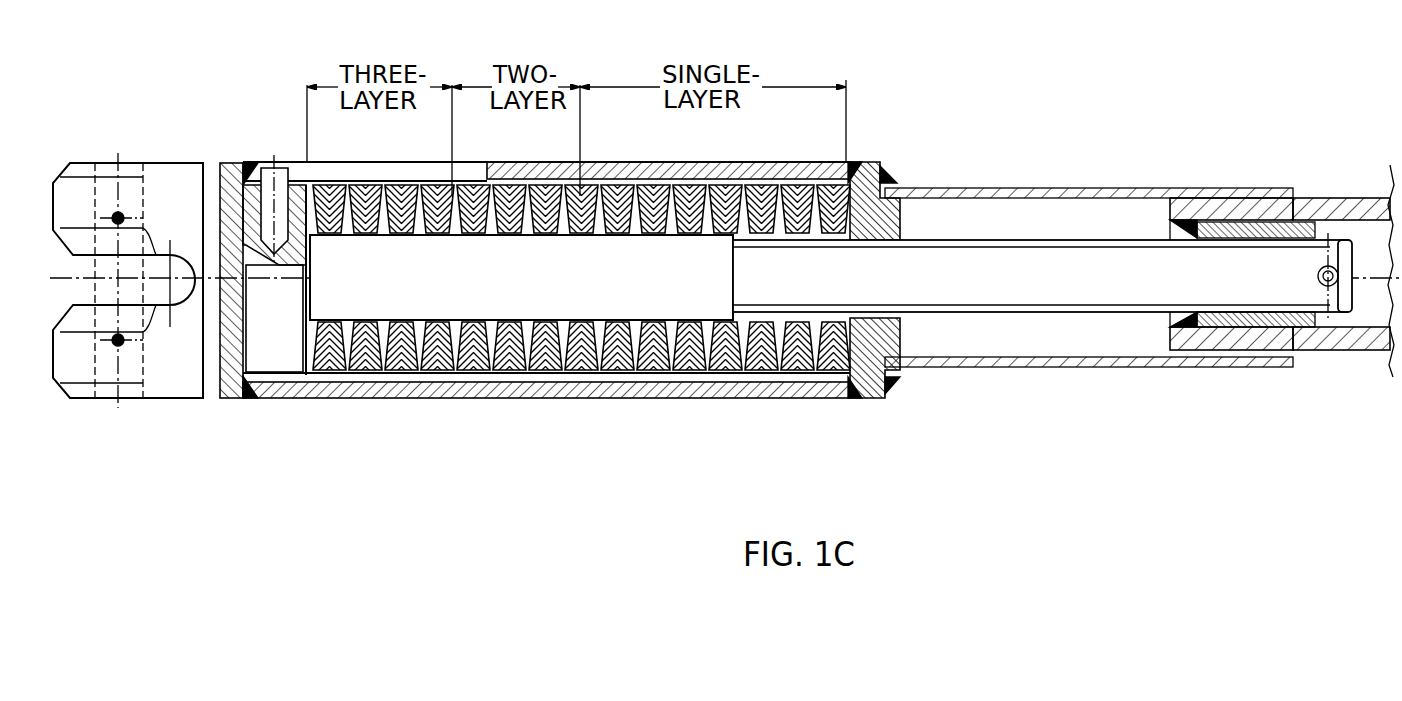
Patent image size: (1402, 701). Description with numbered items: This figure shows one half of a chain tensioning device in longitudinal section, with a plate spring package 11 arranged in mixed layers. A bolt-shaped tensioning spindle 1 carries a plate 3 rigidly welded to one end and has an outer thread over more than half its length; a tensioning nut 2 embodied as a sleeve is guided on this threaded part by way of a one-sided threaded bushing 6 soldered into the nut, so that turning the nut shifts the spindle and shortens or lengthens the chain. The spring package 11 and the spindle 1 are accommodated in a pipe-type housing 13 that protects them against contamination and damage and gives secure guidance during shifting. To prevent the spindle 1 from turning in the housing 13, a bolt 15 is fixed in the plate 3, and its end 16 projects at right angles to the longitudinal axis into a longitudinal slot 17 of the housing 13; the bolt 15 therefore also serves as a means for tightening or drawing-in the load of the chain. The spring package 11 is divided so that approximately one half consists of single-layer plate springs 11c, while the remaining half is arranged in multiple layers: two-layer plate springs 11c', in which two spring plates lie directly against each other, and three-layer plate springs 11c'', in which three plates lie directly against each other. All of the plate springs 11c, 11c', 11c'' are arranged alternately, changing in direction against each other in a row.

The tensioning spindle 1 is at (1042, 354).
The tensioning nut 2 is at (1341, 218).
The plate 3 is at (486, 359).
The threaded bushing 6 is at (1242, 219).
The spring package 11 is at (581, 310).
The single-layer plate springs 11c is at (681, 388).
The two-layer plate springs 11c' is at (533, 386).
The three-layer plate springs 11c'' is at (346, 387).
The housing 13 is at (546, 258).
The bolt 15 is at (278, 267).
The bolt end 16 is at (260, 163).
The longitudinal slot 17 is at (275, 164).